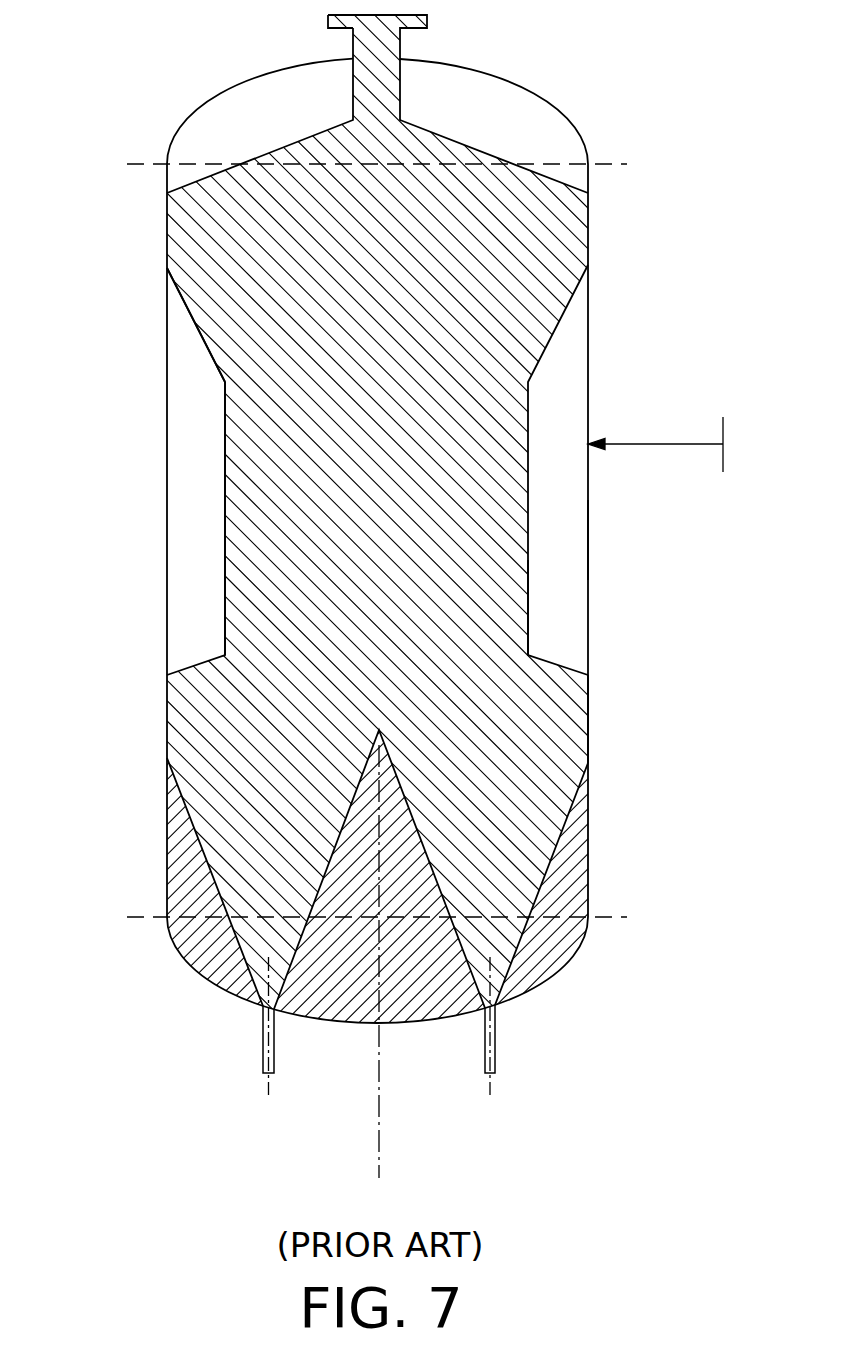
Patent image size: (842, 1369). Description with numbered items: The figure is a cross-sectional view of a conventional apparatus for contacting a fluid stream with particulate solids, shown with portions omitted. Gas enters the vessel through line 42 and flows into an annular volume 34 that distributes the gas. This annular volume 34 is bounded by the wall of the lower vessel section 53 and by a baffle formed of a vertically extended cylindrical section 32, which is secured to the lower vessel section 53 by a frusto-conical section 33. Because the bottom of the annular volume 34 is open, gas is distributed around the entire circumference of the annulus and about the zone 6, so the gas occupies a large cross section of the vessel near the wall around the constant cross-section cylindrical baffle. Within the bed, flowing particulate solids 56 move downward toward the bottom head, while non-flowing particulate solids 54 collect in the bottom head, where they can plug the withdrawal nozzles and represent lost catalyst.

The zone 6 is at (388, 498).
The vertically extended cylindrical section 32 is at (240, 487).
The frusto-conical section 33 is at (198, 332).
The annular volume 34 is at (567, 598).
The line 42 is at (656, 443).
The lower vessel section 53 is at (588, 540).
The non-flowing particulate solids 54 is at (542, 970).
The flowing particulate solids 56 is at (502, 712).